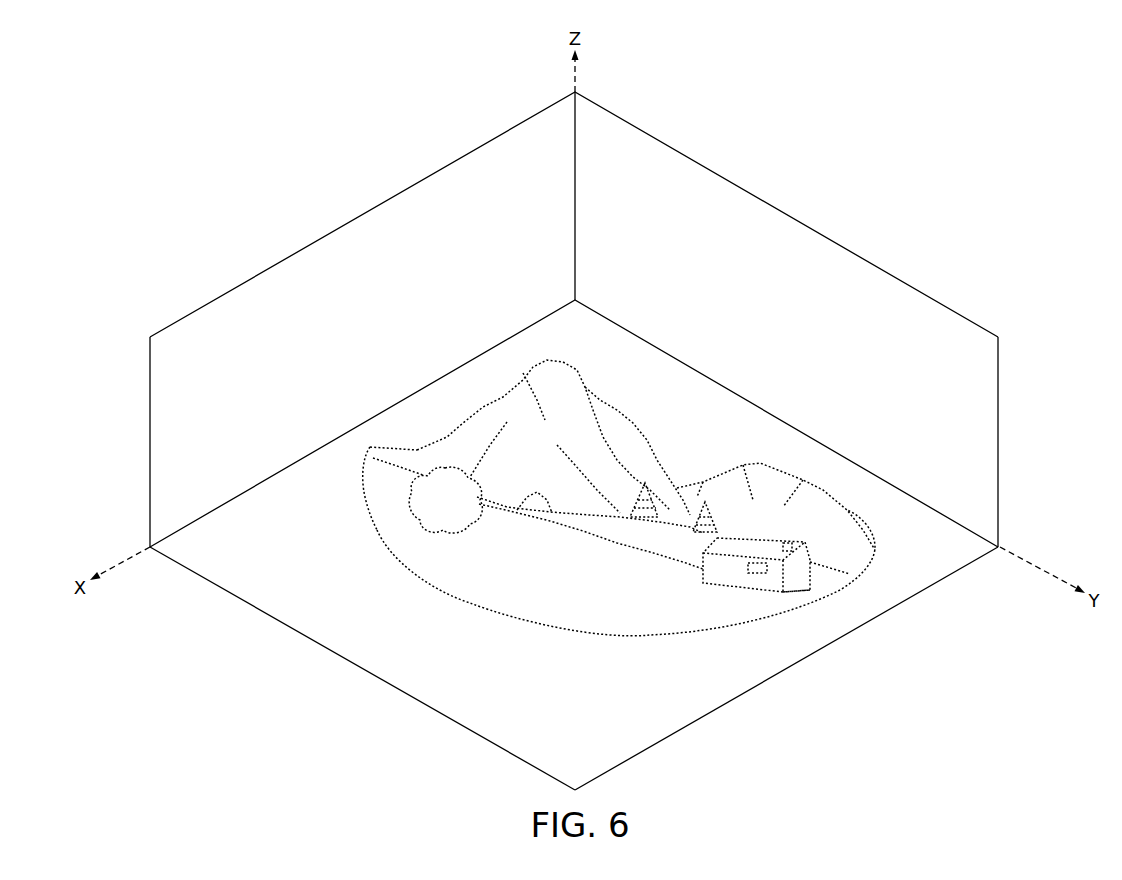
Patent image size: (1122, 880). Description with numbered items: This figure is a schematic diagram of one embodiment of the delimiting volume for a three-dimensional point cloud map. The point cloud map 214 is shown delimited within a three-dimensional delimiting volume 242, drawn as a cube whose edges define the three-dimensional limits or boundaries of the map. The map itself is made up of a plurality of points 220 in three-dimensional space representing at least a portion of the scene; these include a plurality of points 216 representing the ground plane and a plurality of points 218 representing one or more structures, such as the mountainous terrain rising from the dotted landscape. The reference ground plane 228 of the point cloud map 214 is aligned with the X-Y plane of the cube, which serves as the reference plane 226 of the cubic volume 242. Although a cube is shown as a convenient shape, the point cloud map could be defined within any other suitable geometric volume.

The delimiting volume 242 is at (574, 319).
The 3D point cloud map 214 is at (574, 545).
The reference plane 226 is at (753, 688).
The plurality of points representing the ground plane 216 is at (624, 595).
The plurality of points representing one or more structures 218 is at (602, 437).
The plurality of points 220 is at (583, 541).
The reference ground plane 228 is at (358, 487).